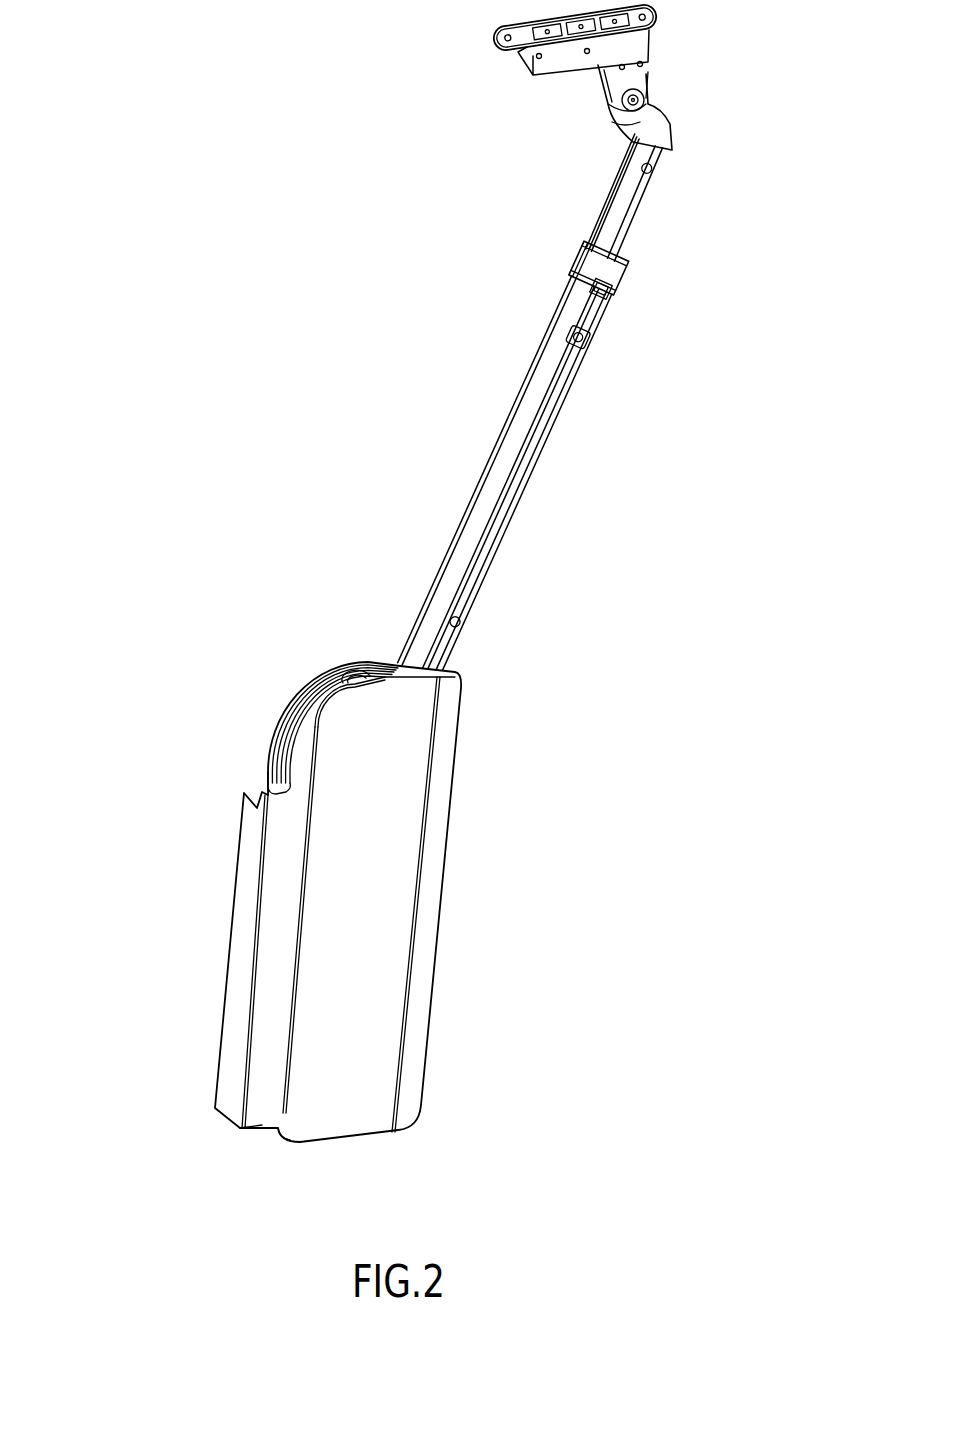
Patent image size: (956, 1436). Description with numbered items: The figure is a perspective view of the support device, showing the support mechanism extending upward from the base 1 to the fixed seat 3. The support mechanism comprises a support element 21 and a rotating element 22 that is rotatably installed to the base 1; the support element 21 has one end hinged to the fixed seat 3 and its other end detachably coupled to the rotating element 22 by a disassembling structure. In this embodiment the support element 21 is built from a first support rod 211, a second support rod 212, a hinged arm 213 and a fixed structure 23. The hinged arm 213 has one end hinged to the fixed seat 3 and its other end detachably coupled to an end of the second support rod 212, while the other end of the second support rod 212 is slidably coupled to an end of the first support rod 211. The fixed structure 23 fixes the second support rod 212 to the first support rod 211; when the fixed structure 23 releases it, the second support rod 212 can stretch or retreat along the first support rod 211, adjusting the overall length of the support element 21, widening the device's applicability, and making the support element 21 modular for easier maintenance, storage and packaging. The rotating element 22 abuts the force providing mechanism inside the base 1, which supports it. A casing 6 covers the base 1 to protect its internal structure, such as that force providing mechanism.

The base 1 is at (337, 666).
The fixed seat 3 is at (607, 50).
The casing 6 is at (375, 878).
The support element 21 is at (481, 399).
The rotating element 22 is at (284, 706).
The fixed structure 23 is at (618, 292).
The first support rod 211 is at (515, 403).
The second support rod 212 is at (610, 208).
The hinged arm 213 is at (632, 125).